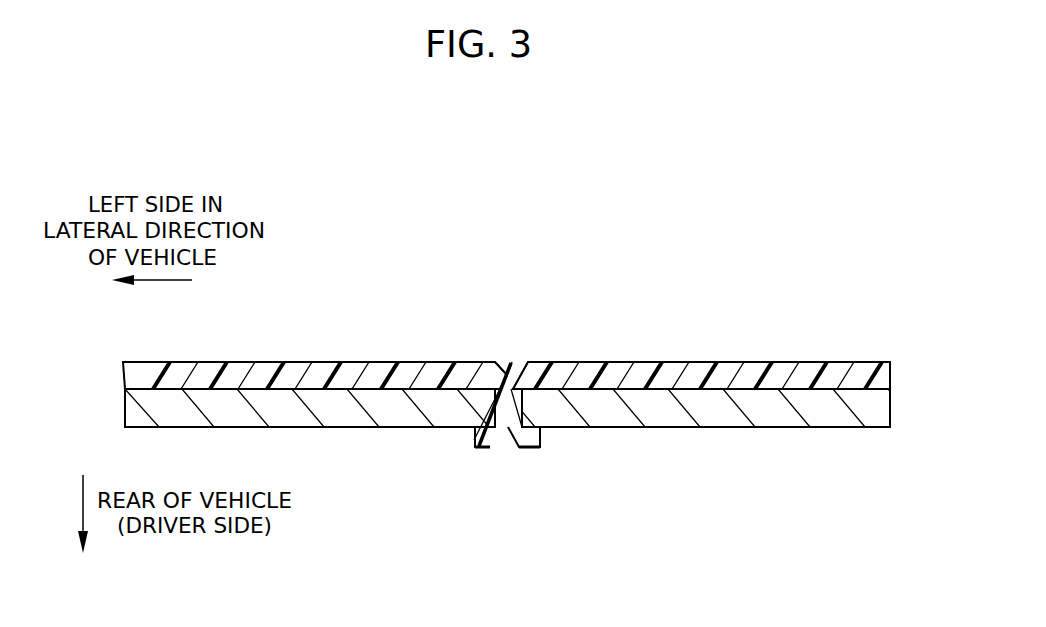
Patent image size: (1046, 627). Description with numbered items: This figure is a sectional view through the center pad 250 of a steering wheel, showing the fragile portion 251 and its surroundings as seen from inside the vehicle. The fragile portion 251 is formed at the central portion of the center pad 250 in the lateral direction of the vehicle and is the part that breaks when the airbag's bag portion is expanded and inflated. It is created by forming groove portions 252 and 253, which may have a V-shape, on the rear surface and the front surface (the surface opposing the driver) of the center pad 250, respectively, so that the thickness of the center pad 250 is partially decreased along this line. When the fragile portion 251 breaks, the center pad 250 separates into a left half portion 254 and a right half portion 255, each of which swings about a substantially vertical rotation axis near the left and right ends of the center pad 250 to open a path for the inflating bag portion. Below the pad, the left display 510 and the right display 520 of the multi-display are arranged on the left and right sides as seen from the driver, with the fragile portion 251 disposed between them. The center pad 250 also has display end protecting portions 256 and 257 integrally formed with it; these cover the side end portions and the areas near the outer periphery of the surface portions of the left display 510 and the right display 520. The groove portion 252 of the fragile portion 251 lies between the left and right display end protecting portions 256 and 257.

The center pad 250 is at (521, 359).
The fragile portion 251 is at (515, 409).
The groove portion 252 is at (508, 438).
The groove portion 253 is at (508, 361).
The left half portion 254 is at (302, 370).
The right half portion 255 is at (708, 362).
The display end protecting portion 256 is at (476, 448).
The display end protecting portion 257 is at (538, 448).
The left display 510 is at (348, 428).
The right display 520 is at (687, 428).